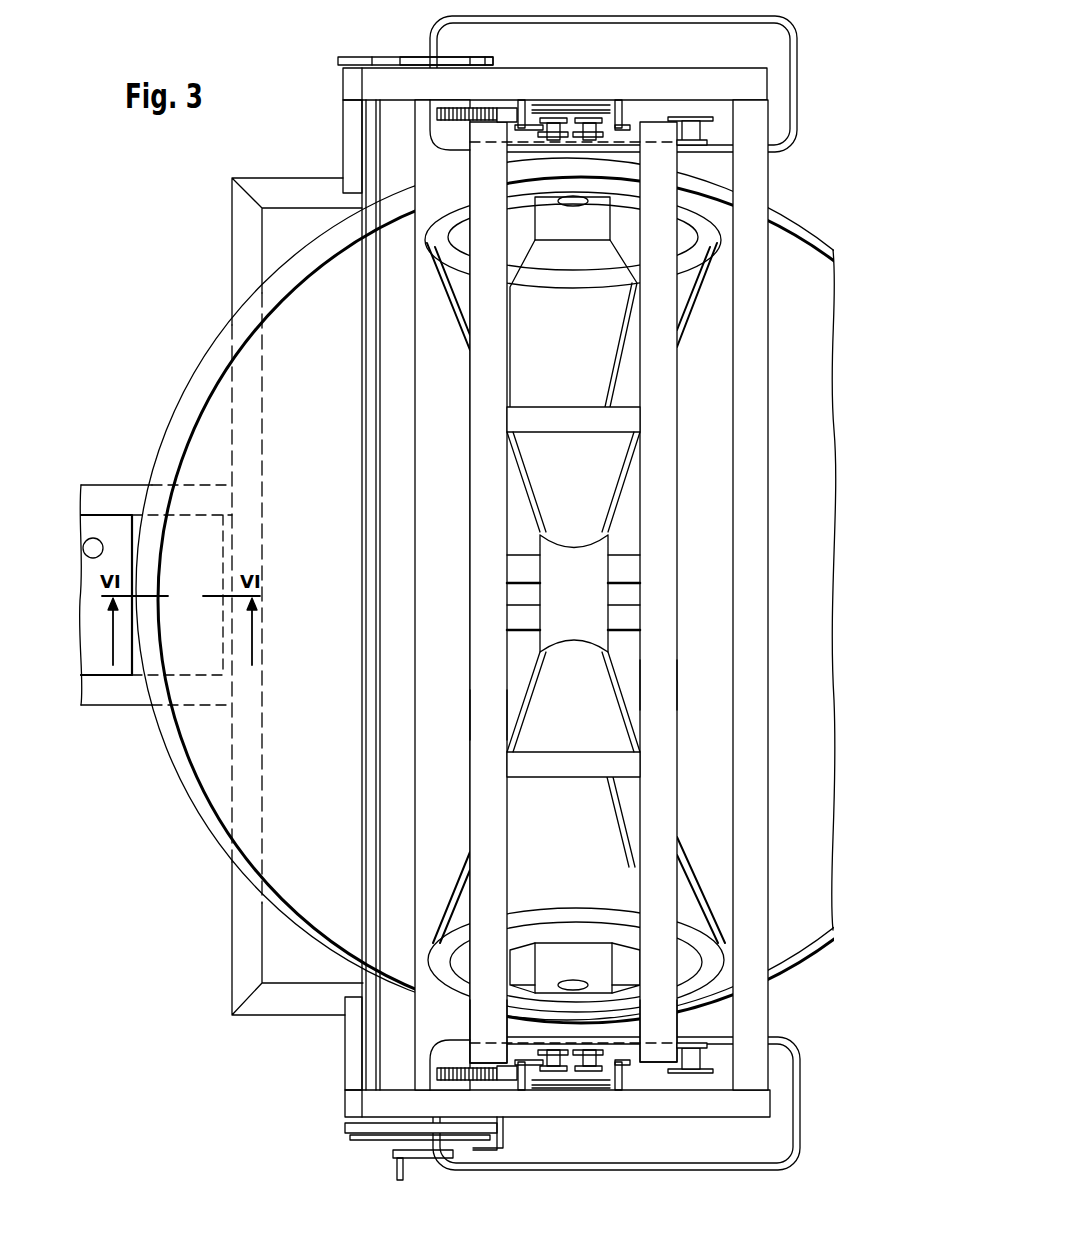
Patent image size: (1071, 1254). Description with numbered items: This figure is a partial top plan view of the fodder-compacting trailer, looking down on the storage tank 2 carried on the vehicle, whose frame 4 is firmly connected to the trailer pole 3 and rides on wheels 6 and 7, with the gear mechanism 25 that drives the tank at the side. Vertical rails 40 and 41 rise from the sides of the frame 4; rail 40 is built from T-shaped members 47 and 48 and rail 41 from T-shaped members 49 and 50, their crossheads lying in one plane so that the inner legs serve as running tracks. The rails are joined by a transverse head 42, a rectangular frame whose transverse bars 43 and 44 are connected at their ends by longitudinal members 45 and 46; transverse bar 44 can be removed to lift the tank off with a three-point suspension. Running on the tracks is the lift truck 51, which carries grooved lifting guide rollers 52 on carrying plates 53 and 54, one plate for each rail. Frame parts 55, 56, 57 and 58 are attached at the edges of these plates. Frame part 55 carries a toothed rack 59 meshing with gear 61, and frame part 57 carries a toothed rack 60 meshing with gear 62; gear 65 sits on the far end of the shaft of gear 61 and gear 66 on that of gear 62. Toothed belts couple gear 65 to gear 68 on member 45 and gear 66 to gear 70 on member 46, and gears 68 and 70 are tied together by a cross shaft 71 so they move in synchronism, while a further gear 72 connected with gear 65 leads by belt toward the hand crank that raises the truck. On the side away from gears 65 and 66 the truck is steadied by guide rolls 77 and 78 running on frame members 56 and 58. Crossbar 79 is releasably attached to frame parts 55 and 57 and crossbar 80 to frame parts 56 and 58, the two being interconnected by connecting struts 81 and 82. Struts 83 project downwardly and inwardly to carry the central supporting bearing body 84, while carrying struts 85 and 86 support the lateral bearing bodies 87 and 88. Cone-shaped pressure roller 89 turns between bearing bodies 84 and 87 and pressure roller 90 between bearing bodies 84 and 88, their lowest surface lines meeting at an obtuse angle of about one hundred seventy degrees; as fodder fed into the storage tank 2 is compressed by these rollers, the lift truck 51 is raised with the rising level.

The storage tank 2 is at (178, 395).
The trailer pole 3 is at (100, 492).
The frame 4 is at (240, 262).
The wheel 6 is at (780, 1097).
The wheel 7 is at (778, 62).
The gear mechanism 25 is at (98, 692).
The vertical rail 40 is at (578, 1075).
The vertical rail 41 is at (565, 115).
The transverse head 42 is at (350, 427).
The transverse bar 43 is at (390, 778).
The transverse bar 44 is at (755, 780).
The longitudinal member 45 is at (735, 1120).
The longitudinal member 46 is at (557, 78).
The T-shaped member 47 is at (525, 1072).
The T-shaped member 48 is at (618, 1068).
The T-shaped member 49 is at (521, 120).
The T-shaped member 50 is at (622, 125).
The lift truck 51 is at (445, 493).
The lifting guide roller 52 is at (592, 118).
The carrying plate 53 is at (637, 1045).
The carrying plate 54 is at (624, 128).
The frame part 55 is at (491, 1052).
The frame member 56 is at (661, 1052).
The frame part 57 is at (491, 135).
The frame member 58 is at (661, 135).
The toothed rack 59 is at (510, 1065).
The toothed rack 60 is at (503, 108).
The gear 61 is at (440, 1058).
The gear 62 is at (440, 122).
The gear 65 is at (455, 1117).
The gear 66 is at (437, 58).
The gear 68 is at (352, 1132).
The gear 70 is at (360, 57).
The cross shaft 71 is at (372, 558).
The gear 72 is at (420, 1145).
The guide roll 77 is at (695, 1047).
The guide roll 78 is at (690, 140).
The crossbar 79 is at (490, 712).
The crossbar 80 is at (665, 685).
The connecting strut 81 is at (520, 780).
The connecting strut 82 is at (520, 415).
The strut 83 is at (518, 620).
The central supporting bearing body 84 is at (560, 570).
The carrying strut 85 is at (520, 962).
The carrying strut 86 is at (530, 230).
The lateral bearing body 87 is at (575, 960).
The lateral bearing body 88 is at (590, 232).
The pressure roller 89 is at (612, 830).
The pressure roller 90 is at (625, 375).